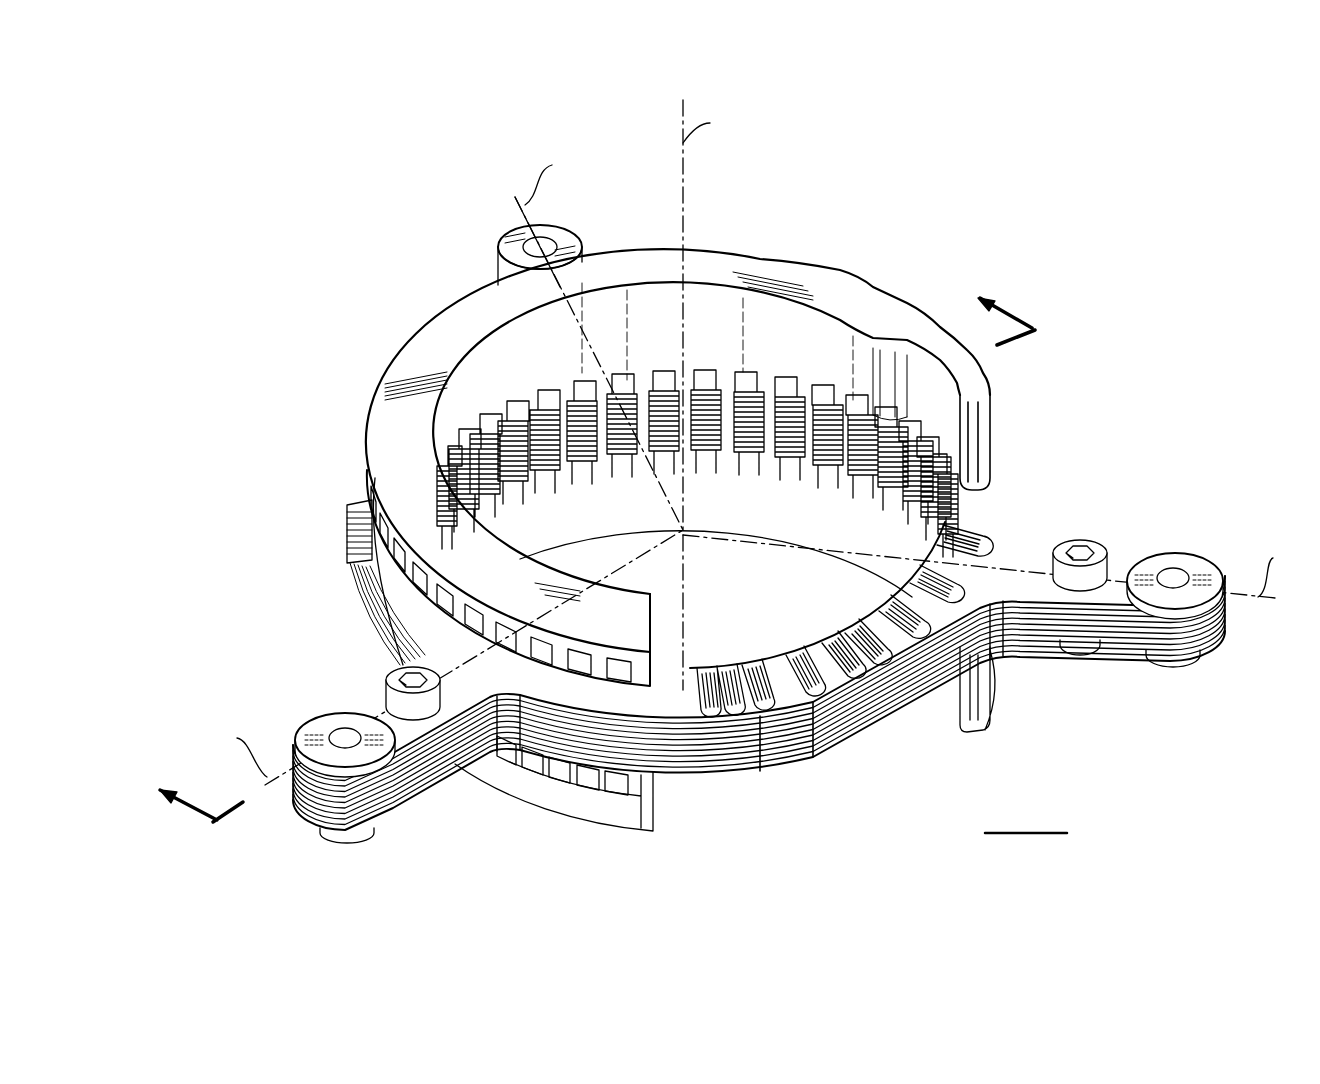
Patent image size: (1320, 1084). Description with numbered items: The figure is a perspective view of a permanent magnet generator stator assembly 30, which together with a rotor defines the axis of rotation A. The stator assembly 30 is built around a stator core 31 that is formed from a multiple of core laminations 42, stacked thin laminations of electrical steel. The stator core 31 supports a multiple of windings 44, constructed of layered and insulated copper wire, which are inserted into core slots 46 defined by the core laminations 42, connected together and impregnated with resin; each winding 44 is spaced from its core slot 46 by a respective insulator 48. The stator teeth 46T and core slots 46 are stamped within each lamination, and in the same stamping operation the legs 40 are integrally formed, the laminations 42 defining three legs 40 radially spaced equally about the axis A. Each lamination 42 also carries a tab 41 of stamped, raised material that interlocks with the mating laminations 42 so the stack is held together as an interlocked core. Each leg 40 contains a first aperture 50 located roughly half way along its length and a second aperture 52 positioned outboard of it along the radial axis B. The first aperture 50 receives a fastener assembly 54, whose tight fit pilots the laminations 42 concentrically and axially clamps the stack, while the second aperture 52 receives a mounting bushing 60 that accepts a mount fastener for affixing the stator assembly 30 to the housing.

The stator assembly 30 is at (1047, 240).
The stator core 31 is at (823, 778).
The legs 40 is at (1118, 557).
The tab 41 is at (797, 746).
The core laminations 42 is at (693, 750).
The windings 44 is at (873, 308).
The core slots 46 is at (813, 643).
The stator teeth 46T is at (760, 657).
The insulator 48 is at (987, 505).
The first aperture 50 is at (1078, 590).
The second aperture 52 is at (1180, 607).
The fastener assembly 54 is at (387, 677).
The mounting bushing 60 is at (340, 712).